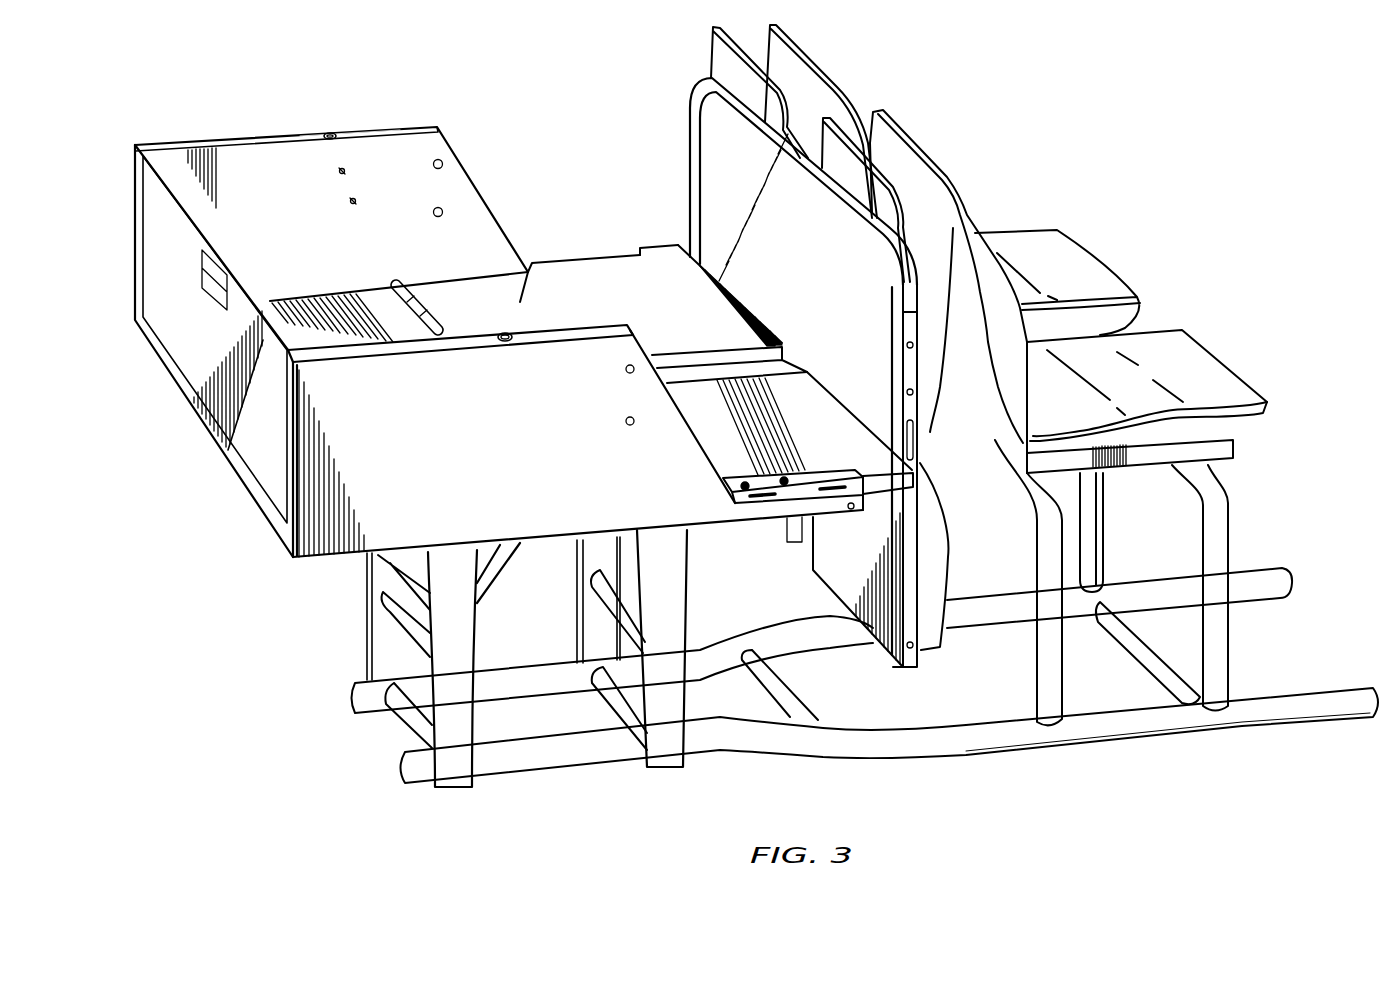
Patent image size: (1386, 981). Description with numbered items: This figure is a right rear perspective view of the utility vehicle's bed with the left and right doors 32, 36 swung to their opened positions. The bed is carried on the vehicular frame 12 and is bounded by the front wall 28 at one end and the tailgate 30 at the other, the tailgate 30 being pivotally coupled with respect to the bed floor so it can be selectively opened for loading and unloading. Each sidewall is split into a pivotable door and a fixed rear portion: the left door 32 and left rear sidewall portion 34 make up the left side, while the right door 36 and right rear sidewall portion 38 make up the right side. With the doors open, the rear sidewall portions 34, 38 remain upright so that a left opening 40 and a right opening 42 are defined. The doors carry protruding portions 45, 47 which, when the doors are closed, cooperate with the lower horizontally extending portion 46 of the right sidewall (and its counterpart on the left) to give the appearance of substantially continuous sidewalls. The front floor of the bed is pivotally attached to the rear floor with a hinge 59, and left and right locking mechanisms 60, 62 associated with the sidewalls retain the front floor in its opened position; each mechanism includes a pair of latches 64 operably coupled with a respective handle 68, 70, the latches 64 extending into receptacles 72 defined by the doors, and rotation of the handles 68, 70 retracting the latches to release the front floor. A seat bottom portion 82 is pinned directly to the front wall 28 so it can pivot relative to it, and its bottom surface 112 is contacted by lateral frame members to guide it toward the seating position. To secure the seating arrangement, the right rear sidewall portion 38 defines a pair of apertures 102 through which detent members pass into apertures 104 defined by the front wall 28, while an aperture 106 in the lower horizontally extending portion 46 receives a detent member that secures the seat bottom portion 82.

The vehicular frame 12 is at (671, 767).
The front wall 28 is at (723, 172).
The tailgate 30 is at (205, 363).
The left door 32 is at (612, 268).
The left rear sidewall portion 34 is at (238, 142).
The right door 36 is at (699, 392).
The right rear sidewall portion 38 is at (388, 343).
The left opening 40 is at (554, 157).
The right opening 42 is at (786, 400).
The protruding portion 45 is at (660, 252).
The lower horizontally extending portion 46 is at (763, 513).
The protruding portion 47 is at (905, 508).
The hinge 59 is at (428, 300).
The left locking mechanism 60 is at (353, 103).
The right locking mechanism 62 is at (522, 322).
The latches 64 is at (350, 201).
The handle 68 is at (329, 133).
The handle 70 is at (500, 345).
The receptacles 72 is at (784, 478).
The seat bottom portion 82 is at (812, 587).
The apertures 102 is at (626, 370).
The apertures 104 is at (907, 392).
The aperture 106 is at (850, 510).
The bottom surface 112 is at (853, 589).